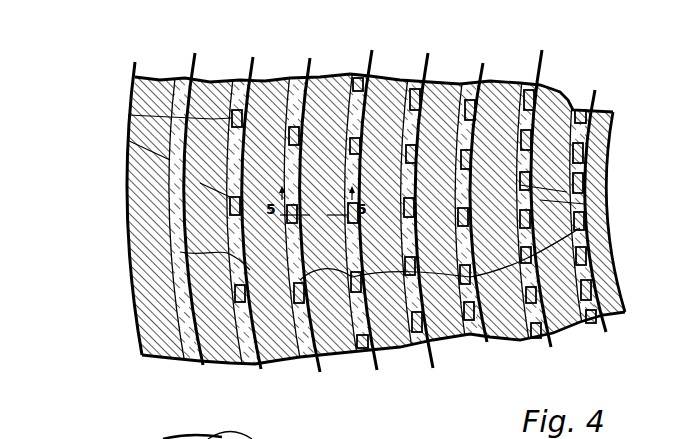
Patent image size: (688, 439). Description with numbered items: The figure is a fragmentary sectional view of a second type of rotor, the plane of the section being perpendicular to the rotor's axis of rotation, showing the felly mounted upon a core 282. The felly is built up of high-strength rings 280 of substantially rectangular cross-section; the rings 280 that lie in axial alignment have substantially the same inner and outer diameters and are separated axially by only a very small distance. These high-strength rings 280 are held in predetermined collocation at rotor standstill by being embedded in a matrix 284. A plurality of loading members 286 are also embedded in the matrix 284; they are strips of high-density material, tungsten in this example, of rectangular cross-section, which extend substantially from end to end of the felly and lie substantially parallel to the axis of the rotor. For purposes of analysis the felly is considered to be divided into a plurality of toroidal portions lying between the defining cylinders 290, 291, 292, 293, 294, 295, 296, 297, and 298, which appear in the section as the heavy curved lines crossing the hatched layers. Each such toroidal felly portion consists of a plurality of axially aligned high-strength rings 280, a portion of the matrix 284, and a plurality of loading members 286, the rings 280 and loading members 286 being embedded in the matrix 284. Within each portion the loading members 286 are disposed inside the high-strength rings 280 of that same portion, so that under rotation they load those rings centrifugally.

The high-strength ring 280 is at (208, 82).
The core 282 is at (598, 162).
The matrix 284 is at (177, 233).
The loading member 286 is at (128, 115).
The defining cylinder 290 is at (606, 332).
The defining cylinder 291 is at (551, 347).
The defining cylinder 292 is at (528, 370).
The defining cylinder 293 is at (480, 382).
The defining cylinder 294 is at (413, 391).
The defining cylinder 295 is at (344, 396).
The defining cylinder 296 is at (261, 369).
The defining cylinder 297 is at (203, 365).
The defining cylinder 298 is at (142, 356).